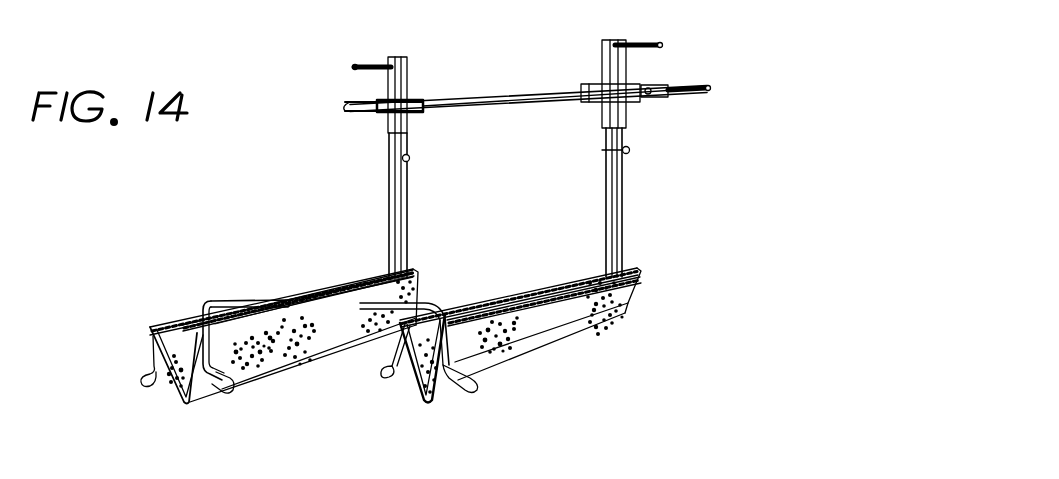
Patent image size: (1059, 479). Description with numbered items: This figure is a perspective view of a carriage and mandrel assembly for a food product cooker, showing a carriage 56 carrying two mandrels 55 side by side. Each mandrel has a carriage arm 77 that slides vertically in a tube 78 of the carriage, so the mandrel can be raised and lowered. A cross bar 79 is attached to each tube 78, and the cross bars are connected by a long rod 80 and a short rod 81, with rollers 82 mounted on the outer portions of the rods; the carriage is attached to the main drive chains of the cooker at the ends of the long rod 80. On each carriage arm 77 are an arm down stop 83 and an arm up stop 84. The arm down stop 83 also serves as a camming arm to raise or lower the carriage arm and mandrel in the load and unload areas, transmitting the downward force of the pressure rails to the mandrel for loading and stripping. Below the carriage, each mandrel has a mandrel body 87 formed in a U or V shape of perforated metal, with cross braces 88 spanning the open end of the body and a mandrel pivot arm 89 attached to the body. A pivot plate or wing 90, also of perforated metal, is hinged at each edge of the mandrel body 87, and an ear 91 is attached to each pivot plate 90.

The mandrel 55 is at (300, 404).
The carriage 56 is at (462, 97).
The carriage arm 77 is at (623, 235).
The tube 78 is at (629, 148).
The cross bar 79 is at (418, 112).
The long rod 80 is at (701, 87).
The short rod 81 is at (650, 86).
The roller 82 is at (600, 84).
The arm down stop 83 is at (636, 42).
The arm up stop 84 is at (625, 152).
The mandrel body 87 is at (430, 403).
The cross brace 88 is at (313, 288).
The mandrel pivot arm 89 is at (240, 268).
The pivot plate 90 is at (540, 320).
The ear 91 is at (470, 393).